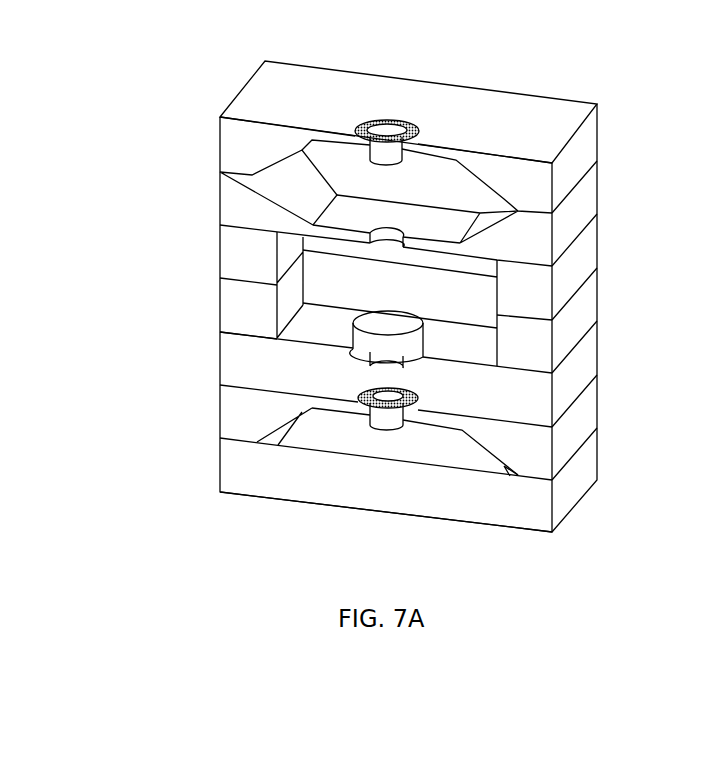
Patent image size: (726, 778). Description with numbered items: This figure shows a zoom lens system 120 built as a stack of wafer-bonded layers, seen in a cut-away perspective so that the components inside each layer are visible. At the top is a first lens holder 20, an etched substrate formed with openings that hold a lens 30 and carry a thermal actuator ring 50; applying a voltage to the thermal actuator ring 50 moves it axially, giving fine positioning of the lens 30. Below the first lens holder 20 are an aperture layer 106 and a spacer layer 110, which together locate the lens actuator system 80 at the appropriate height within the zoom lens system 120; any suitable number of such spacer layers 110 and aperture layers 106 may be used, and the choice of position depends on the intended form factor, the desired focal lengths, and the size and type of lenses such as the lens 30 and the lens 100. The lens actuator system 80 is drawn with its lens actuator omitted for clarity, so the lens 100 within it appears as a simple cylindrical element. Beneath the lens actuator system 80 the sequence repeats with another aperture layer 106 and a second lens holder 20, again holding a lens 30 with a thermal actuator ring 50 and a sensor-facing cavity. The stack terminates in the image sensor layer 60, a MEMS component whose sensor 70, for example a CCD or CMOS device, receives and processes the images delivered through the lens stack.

The zoom lens system 120 is at (592, 82).
The lens holder 20 is at (558, 143).
The aperture layer 106 is at (552, 253).
The spacer layer 110 is at (553, 308).
The lens actuator system 80 is at (543, 358).
The lens 100 is at (352, 328).
The thermal actuator ring 50 is at (413, 123).
The lens 30 is at (378, 163).
The sensor 70 is at (328, 437).
The image sensor layer 60 is at (535, 518).